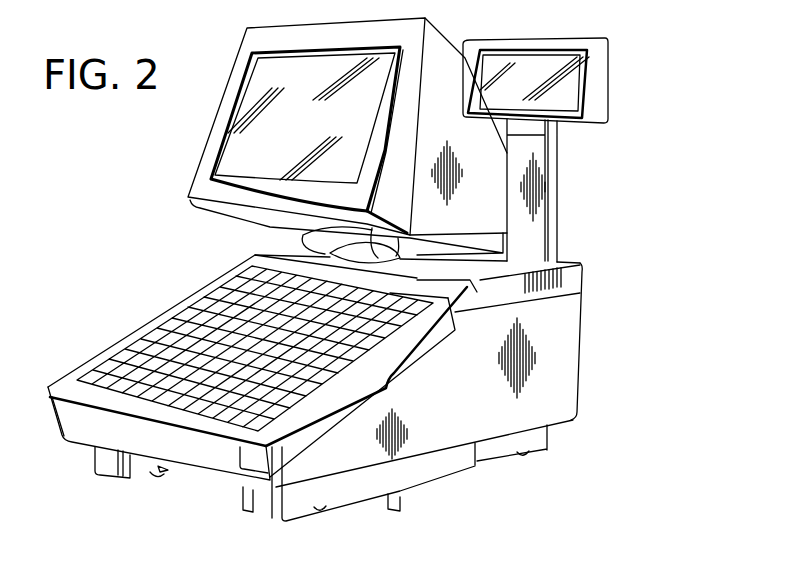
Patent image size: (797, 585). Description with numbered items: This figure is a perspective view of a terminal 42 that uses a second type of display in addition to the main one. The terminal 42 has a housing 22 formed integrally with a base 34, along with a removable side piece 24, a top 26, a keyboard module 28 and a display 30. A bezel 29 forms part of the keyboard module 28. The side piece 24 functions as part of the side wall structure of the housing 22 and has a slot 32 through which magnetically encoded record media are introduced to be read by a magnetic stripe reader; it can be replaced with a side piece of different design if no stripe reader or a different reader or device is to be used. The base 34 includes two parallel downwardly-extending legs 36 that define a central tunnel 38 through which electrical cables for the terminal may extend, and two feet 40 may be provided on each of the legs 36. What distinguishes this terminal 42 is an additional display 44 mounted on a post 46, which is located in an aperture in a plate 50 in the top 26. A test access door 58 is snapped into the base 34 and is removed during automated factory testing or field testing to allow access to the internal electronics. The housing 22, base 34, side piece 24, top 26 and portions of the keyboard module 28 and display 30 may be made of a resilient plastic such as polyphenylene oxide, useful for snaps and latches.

The housing 22 is at (577, 338).
The side piece 24 is at (260, 465).
The top 26 is at (280, 248).
The keyboard module 28 is at (135, 316).
The bezel 29 is at (83, 363).
The display 30 is at (207, 138).
The slot 32 is at (388, 392).
The base 34 is at (75, 446).
The legs 36 is at (103, 477).
The central tunnel 38 is at (165, 470).
The feet 40 is at (157, 474).
The terminal 42 is at (598, 266).
The additional display 44 is at (607, 95).
The post 46 is at (555, 208).
The plate 50 is at (542, 262).
The test access door 58 is at (450, 468).